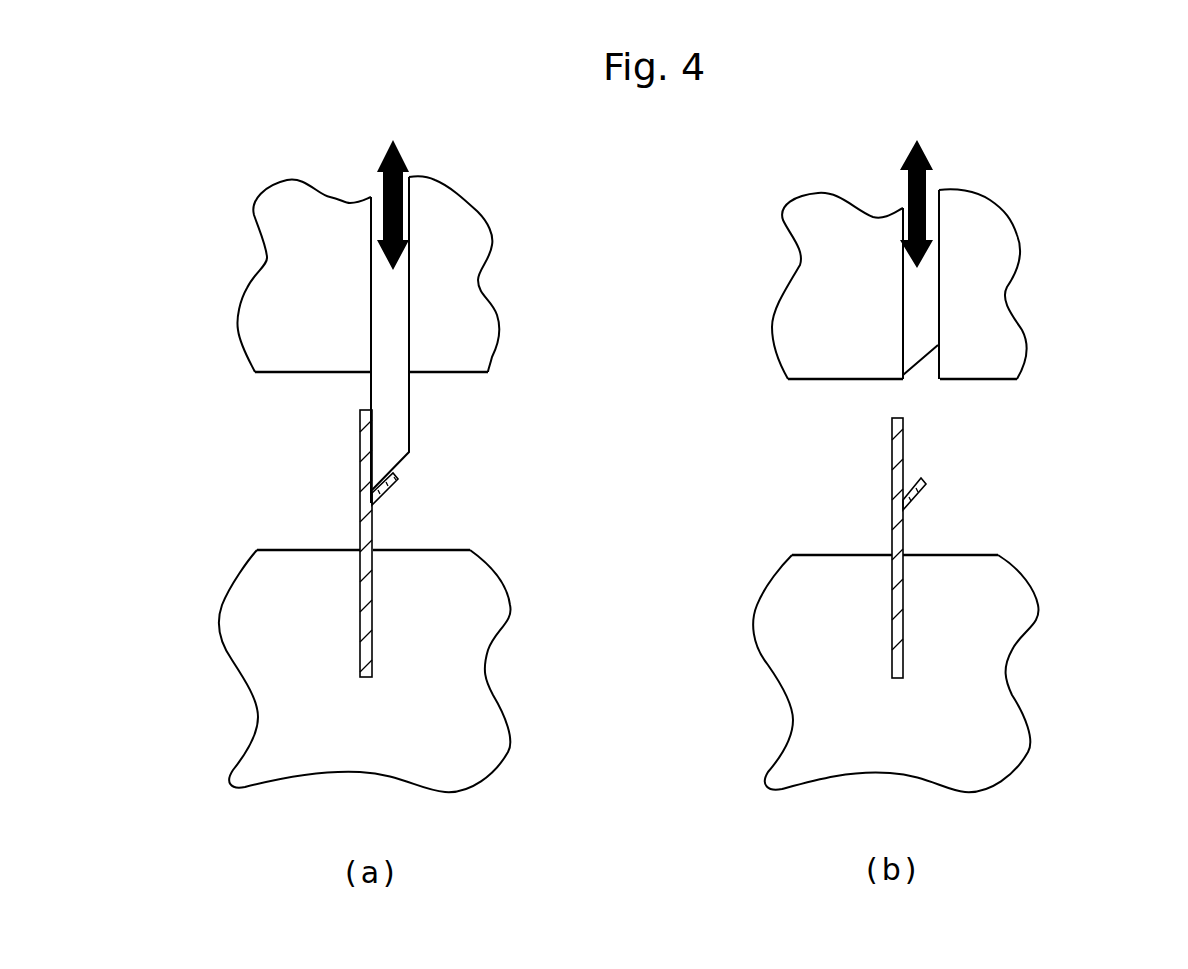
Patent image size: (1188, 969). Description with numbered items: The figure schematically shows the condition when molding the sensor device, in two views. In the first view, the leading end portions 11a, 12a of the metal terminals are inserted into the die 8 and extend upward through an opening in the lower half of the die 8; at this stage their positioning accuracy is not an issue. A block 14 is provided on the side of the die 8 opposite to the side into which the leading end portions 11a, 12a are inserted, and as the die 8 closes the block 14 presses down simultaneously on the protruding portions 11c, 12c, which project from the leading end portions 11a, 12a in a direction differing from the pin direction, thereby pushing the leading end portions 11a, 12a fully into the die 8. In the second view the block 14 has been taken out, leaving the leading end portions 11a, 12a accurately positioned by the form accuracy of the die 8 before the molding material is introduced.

The die 8 is at (482, 245).
The block 14 is at (397, 378).
The leading end portion 11a is at (522, 540).
The leading end portion 12a is at (892, 477).
The protruding portion 11c is at (760, 510).
The protruding portion 12c is at (383, 493).